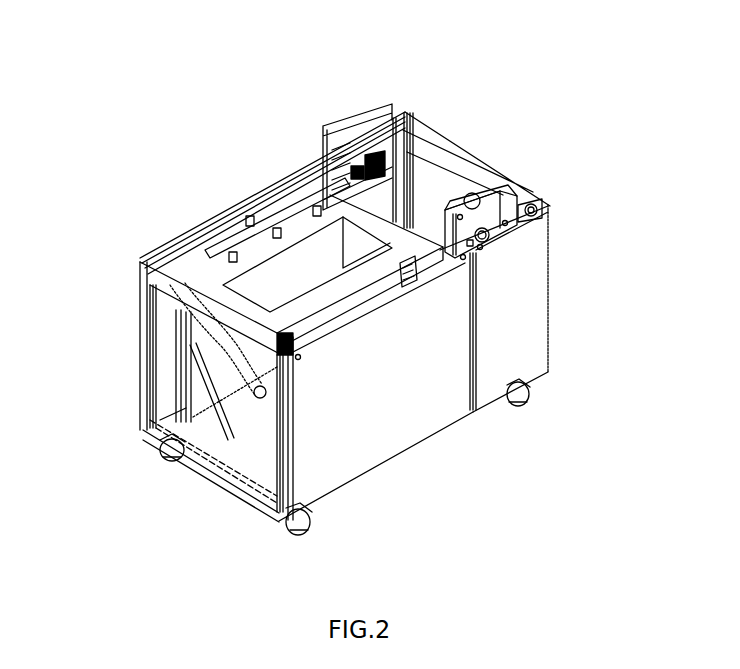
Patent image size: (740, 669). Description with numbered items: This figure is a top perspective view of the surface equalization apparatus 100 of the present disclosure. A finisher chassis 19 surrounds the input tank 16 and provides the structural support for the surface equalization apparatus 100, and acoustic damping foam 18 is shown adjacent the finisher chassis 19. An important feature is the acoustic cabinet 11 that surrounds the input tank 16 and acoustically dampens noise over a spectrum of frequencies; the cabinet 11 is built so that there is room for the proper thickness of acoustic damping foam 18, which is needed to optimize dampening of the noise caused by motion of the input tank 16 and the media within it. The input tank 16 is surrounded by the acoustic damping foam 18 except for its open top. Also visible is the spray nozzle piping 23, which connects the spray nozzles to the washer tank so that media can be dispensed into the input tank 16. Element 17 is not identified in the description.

The surface equalization apparatus 100 is at (266, 136).
The acoustic cabinet 11 is at (404, 474).
The input tank 16 is at (226, 282).
The electronics module 17 is at (374, 116).
The acoustic damping foam 18 is at (175, 447).
The finisher chassis 19 is at (185, 372).
The spray nozzle piping 23 is at (421, 237).